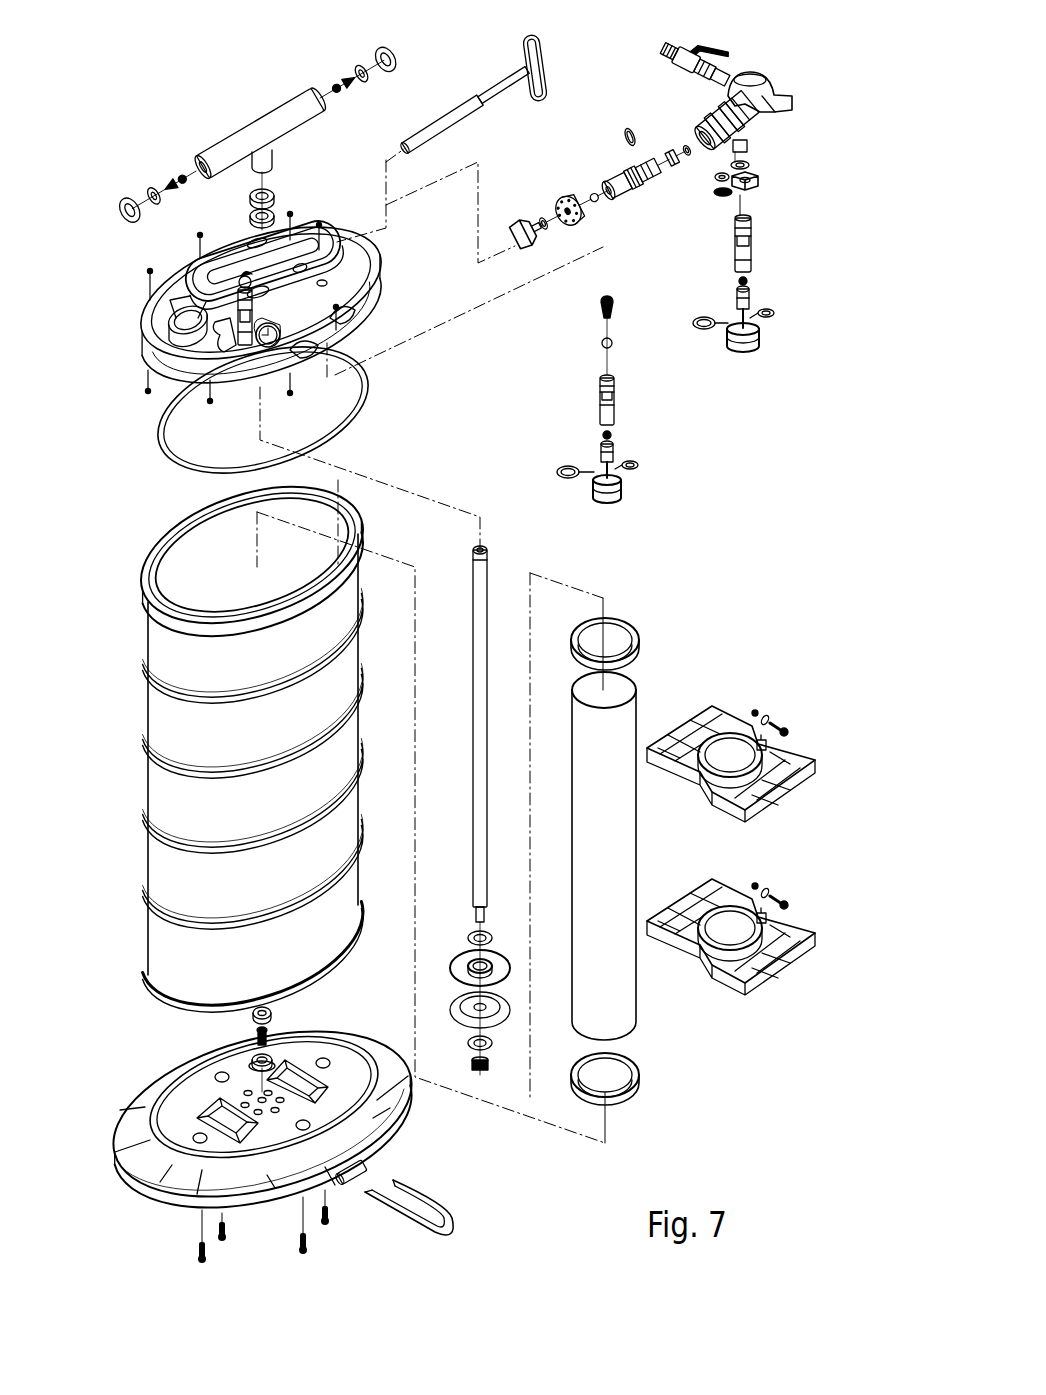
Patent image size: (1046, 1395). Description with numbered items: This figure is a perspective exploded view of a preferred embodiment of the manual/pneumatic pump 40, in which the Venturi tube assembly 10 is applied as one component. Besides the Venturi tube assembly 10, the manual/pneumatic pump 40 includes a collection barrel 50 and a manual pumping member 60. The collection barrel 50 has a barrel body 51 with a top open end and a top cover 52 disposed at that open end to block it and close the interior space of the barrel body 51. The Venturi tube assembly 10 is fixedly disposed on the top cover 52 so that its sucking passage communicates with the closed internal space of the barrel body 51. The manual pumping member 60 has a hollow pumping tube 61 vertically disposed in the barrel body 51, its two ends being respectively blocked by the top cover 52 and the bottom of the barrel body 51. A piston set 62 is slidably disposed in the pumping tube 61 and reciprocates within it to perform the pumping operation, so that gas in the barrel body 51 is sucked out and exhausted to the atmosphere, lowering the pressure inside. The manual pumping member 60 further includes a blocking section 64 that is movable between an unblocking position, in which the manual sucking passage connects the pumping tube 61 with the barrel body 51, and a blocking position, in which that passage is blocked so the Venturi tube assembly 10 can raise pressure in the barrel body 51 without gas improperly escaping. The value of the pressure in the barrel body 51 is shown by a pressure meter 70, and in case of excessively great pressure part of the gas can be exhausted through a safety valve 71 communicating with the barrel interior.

The Venturi tube assembly 10 is at (776, 75).
The manual/pneumatic pump 40 is at (783, 1163).
The collection barrel 50 is at (125, 682).
The barrel body 51 is at (157, 860).
The top cover 52 is at (150, 352).
The manual pumping member 60 is at (648, 665).
The pumping tube 61 is at (633, 858).
The piston set 62 is at (508, 1036).
The blocking section 64 is at (488, 70).
The pressure meter 70 is at (270, 347).
The safety valve 71 is at (243, 335).